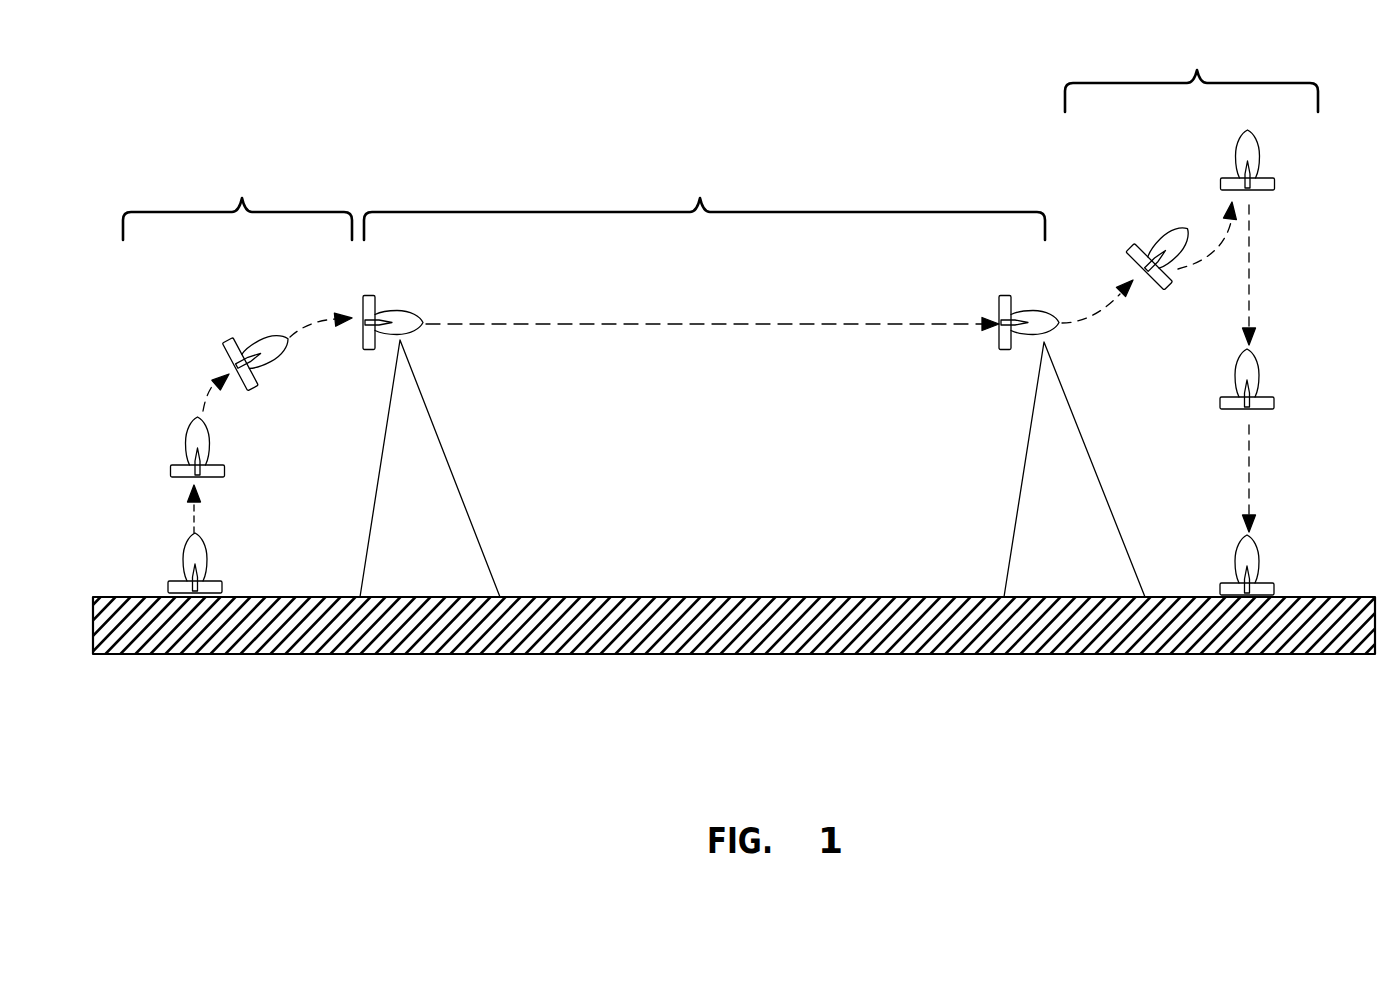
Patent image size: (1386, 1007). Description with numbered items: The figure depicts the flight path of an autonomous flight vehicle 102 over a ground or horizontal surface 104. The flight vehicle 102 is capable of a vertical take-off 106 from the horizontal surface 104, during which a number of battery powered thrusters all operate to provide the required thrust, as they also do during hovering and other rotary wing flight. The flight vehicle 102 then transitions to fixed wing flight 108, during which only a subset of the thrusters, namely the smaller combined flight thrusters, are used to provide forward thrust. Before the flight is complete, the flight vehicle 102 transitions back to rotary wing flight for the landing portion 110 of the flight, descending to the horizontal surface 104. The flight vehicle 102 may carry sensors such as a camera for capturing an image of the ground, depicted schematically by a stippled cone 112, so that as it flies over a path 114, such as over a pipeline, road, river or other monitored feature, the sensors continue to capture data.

The flight vehicle 102 is at (234, 583).
The horizontal surface 104 is at (442, 655).
The vertical take-off 106 is at (237, 377).
The fixed wing flight 108 is at (752, 379).
The landing portion 110 is at (1191, 317).
The stippled cone 112 is at (455, 477).
The path 114 is at (743, 324).